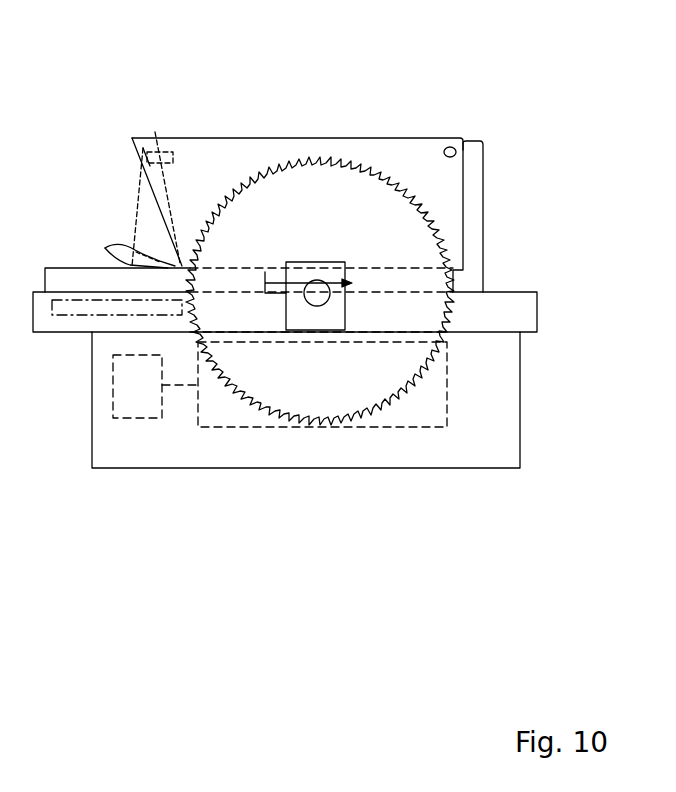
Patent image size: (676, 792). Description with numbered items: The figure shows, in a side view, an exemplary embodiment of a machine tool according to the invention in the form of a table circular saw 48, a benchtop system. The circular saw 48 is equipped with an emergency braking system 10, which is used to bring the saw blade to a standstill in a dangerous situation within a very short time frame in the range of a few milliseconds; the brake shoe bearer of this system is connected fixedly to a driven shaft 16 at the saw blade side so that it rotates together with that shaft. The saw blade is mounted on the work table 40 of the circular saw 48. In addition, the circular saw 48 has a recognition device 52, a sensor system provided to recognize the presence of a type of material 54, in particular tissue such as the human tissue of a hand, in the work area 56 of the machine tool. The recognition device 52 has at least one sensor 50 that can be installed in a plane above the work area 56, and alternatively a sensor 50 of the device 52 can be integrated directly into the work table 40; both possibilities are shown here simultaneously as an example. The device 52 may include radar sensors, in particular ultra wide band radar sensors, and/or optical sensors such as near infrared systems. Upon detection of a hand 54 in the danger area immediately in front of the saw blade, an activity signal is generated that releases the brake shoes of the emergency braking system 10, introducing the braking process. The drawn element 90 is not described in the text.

The emergency braking system 10 is at (335, 312).
The driven shaft 16 is at (317, 297).
The work table 40 is at (497, 306).
The circular saw 48 is at (473, 97).
The sensor 50 is at (155, 130).
The recognition device 52 is at (178, 140).
The type of material 54 is at (122, 252).
The work area 56 is at (160, 274).
The controller 90 is at (132, 387).